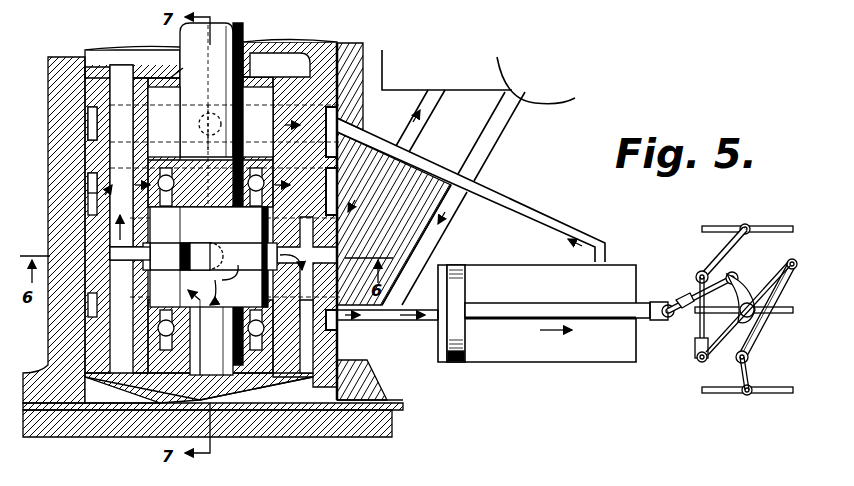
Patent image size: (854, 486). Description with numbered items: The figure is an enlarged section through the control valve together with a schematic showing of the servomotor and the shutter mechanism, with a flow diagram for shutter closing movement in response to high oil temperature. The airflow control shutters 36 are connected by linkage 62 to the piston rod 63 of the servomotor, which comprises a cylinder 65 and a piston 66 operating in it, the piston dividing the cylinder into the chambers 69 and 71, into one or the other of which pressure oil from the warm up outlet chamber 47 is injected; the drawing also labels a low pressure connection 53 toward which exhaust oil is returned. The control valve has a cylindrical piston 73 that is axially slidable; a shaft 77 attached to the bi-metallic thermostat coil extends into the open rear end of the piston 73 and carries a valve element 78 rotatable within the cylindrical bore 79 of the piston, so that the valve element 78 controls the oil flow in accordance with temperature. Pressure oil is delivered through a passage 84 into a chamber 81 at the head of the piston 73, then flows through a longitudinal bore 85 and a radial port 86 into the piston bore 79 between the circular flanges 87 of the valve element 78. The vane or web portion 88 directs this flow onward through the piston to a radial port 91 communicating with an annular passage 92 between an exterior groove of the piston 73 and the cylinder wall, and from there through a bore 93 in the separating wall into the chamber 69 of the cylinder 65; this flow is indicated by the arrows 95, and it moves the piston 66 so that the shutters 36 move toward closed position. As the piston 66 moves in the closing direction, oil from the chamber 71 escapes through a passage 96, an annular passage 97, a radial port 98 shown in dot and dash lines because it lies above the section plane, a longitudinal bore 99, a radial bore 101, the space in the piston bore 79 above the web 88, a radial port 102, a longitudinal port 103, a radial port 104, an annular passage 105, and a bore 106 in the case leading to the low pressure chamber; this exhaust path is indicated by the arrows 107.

The shutters 36 is at (772, 228).
The warm up outlet chamber 47 is at (550, 103).
The low pressure conduit 53 is at (382, 50).
The linkage 62 is at (686, 287).
The piston rod 63 is at (512, 310).
The cylinder 65 is at (573, 356).
The piston 66 is at (467, 277).
The chamber 69 is at (455, 353).
The chamber 71 is at (550, 342).
The piston 73 is at (64, 352).
The shaft 77 is at (244, 26).
The valve element 78 is at (84, 316).
The bore 79 is at (126, 97).
The chamber 81 is at (290, 397).
The passage 84 is at (492, 152).
The longitudinal bore 85 is at (307, 372).
The radial port 86 is at (300, 232).
The circular flanges 87 is at (210, 257).
The vane or web portion 88 is at (190, 257).
The radial port 91 is at (213, 318).
The annular passage 92 is at (363, 372).
The bore 93 is at (438, 305).
The arrows 95 is at (465, 222).
The passage 96 is at (558, 199).
The annular passage 97 is at (337, 107).
The radial port 98 is at (193, 127).
The longitudinal bore 99 is at (250, 160).
The radial bore 101 is at (218, 242).
The radial port 102 is at (133, 258).
The longitudinal port 103 is at (115, 155).
The radial port 104 is at (110, 173).
The annular passage 105 is at (337, 206).
The bore 106 is at (365, 150).
The arrows 107 is at (210, 115).